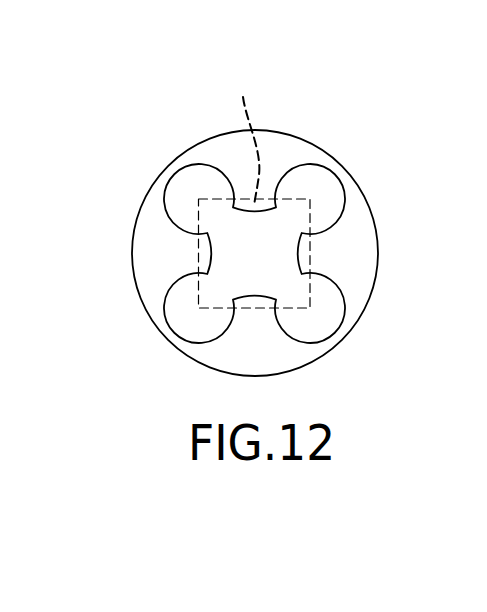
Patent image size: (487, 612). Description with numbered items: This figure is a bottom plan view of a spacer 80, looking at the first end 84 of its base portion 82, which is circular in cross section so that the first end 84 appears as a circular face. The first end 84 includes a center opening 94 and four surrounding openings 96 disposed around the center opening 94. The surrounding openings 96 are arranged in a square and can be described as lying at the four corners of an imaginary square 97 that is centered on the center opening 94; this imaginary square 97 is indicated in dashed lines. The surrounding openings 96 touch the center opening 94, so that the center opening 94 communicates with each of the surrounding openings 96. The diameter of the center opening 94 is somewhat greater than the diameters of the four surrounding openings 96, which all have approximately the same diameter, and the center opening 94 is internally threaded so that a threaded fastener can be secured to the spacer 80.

The spacer 80 is at (253, 219).
The base portion 82 is at (231, 264).
The first end 84 is at (153, 268).
The center opening 94 is at (309, 253).
The surrounding openings 96 is at (328, 200).
The imaginary square 97 is at (248, 138).